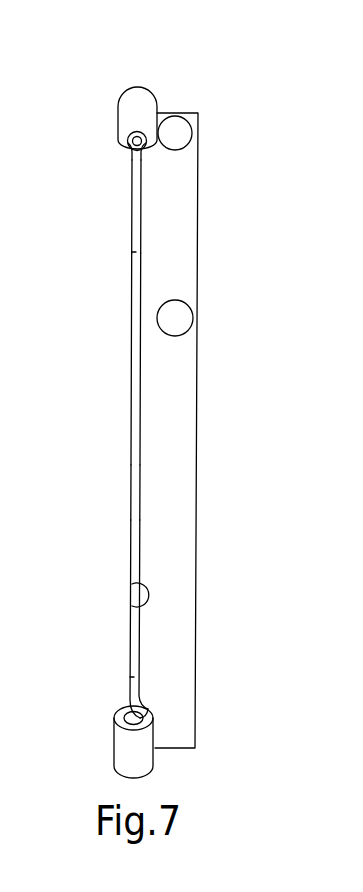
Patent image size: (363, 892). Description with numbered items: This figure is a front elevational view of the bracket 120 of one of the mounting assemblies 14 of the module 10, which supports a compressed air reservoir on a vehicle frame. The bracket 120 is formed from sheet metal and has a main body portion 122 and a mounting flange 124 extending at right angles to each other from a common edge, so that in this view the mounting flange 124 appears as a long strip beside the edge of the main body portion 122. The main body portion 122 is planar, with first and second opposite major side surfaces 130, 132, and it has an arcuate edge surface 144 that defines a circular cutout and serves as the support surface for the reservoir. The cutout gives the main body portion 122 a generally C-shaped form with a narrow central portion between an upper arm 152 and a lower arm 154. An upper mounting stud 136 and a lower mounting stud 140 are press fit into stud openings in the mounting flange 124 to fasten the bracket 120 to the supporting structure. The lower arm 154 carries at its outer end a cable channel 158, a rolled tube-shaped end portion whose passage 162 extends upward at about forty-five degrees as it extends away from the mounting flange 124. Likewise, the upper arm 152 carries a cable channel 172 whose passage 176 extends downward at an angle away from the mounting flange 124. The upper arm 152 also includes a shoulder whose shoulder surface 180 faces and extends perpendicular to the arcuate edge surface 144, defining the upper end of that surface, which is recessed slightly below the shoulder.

The module 10 is at (240, 467).
The mounting assembly 14 is at (229, 413).
The bracket 120 is at (236, 768).
The main body portion 122 is at (131, 488).
The mounting flange 124 is at (173, 535).
The first major side surface 130 is at (131, 557).
The second major side surface 132 is at (133, 603).
The upper mounting stud 136 is at (180, 130).
The lower mounting stud 140 is at (175, 320).
The arcuate edge surface 144 is at (137, 443).
The upper arm 152 is at (133, 215).
The lower arm 154 is at (140, 690).
The cable channel 158 is at (113, 757).
The passage 162 is at (128, 715).
The cable channel 172 is at (140, 102).
The passage 176 is at (130, 148).
The shoulder surface 180 is at (135, 253).